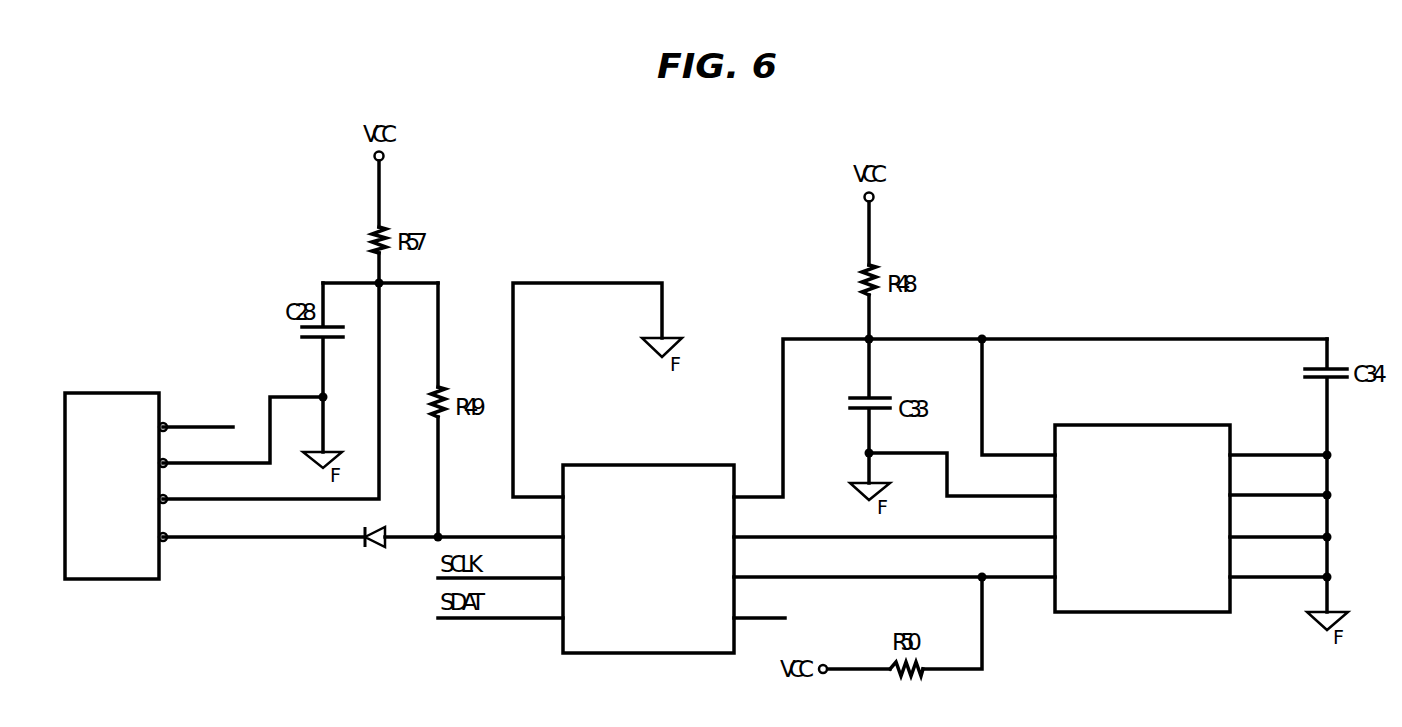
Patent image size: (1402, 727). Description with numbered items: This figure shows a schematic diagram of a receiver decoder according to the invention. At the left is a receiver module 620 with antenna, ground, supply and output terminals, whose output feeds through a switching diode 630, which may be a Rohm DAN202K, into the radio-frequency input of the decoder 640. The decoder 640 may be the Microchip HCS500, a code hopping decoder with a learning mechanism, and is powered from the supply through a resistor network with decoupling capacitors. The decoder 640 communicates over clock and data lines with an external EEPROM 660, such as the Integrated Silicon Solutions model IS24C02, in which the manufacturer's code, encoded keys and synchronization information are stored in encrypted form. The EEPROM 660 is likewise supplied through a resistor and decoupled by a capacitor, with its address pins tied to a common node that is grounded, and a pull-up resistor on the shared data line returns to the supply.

The RF receiver module 620 is at (123, 393).
The switching diode 630 is at (356, 558).
The decoder 640 is at (590, 653).
The external EEPROM 660 is at (1177, 612).